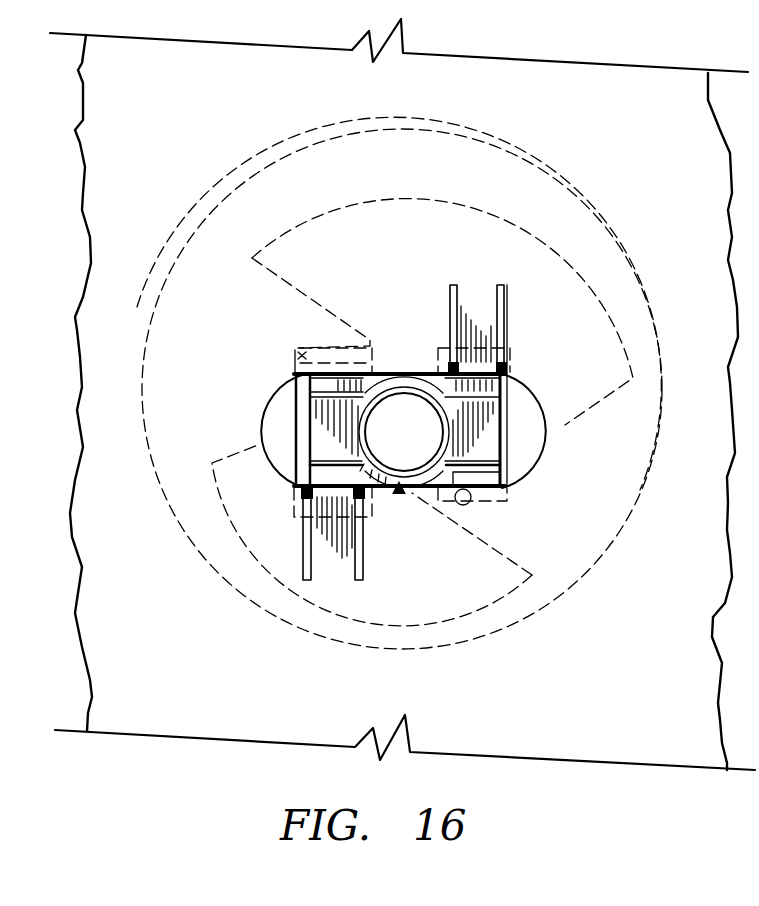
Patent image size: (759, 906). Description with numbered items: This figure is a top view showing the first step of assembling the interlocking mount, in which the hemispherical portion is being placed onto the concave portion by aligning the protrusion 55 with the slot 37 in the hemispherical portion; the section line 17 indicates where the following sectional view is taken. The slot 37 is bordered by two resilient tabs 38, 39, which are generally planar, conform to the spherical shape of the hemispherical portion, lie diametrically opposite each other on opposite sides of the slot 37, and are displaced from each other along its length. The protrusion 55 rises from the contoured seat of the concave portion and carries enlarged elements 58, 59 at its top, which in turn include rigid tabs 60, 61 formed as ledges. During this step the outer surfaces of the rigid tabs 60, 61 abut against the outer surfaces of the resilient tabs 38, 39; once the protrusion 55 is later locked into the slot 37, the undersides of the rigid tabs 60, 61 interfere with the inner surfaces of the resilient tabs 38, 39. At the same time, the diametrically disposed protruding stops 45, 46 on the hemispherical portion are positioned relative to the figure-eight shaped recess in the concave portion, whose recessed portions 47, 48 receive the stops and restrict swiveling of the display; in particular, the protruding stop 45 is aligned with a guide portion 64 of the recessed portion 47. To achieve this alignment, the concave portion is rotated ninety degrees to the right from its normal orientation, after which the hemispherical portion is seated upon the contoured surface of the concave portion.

The section line 17- 17 is at (332, 286).
The slot 37 is at (528, 395).
The resilient tab 38 is at (470, 315).
The resilient tab 39 is at (335, 533).
The protruding stop 45 is at (300, 355).
The protruding stop 46 is at (470, 498).
The recessed portion 47 is at (450, 238).
The recessed portion 48 is at (467, 602).
The protrusion 55 is at (399, 494).
The enlarged element 58 is at (483, 436).
The enlarged element 59 is at (312, 418).
The rigid tab 60 is at (485, 385).
The rigid tab 61 is at (325, 478).
The guide portion 64 is at (324, 360).